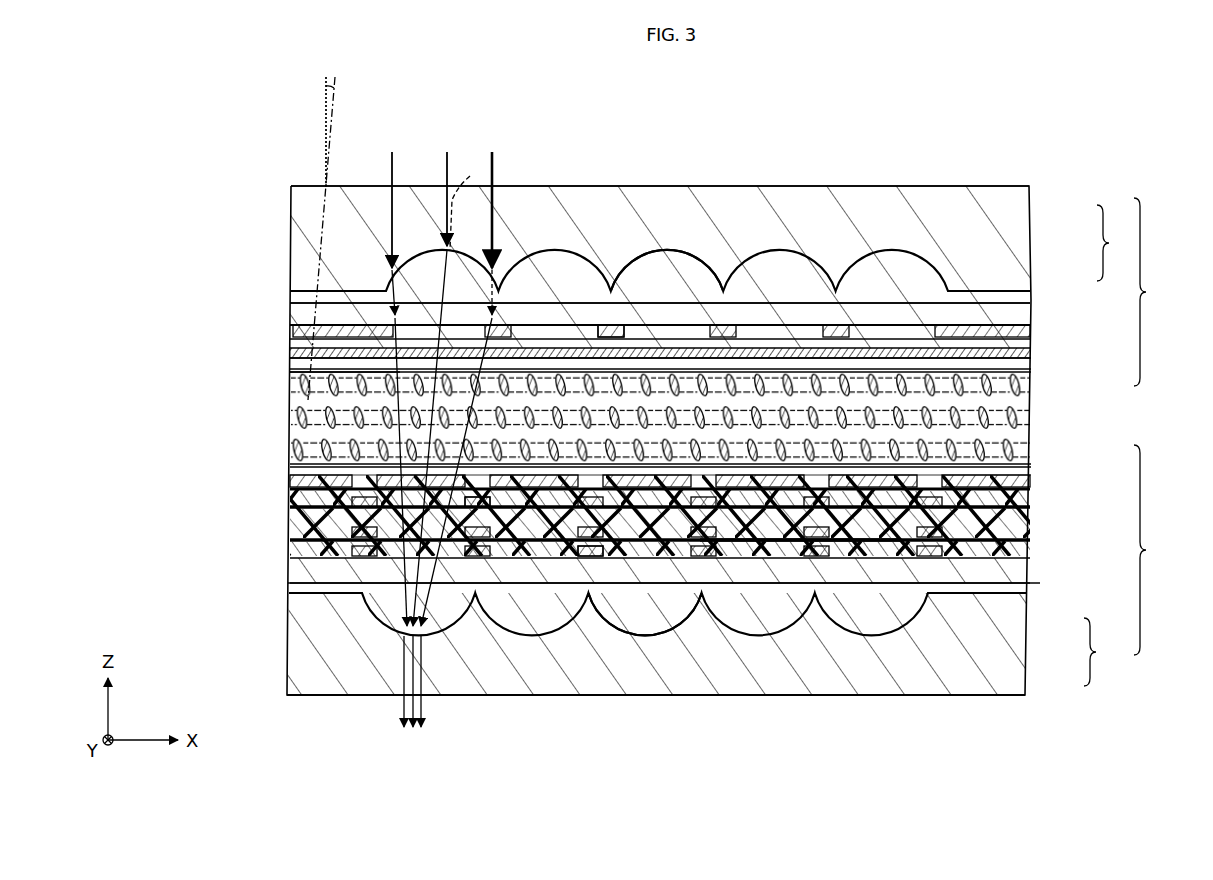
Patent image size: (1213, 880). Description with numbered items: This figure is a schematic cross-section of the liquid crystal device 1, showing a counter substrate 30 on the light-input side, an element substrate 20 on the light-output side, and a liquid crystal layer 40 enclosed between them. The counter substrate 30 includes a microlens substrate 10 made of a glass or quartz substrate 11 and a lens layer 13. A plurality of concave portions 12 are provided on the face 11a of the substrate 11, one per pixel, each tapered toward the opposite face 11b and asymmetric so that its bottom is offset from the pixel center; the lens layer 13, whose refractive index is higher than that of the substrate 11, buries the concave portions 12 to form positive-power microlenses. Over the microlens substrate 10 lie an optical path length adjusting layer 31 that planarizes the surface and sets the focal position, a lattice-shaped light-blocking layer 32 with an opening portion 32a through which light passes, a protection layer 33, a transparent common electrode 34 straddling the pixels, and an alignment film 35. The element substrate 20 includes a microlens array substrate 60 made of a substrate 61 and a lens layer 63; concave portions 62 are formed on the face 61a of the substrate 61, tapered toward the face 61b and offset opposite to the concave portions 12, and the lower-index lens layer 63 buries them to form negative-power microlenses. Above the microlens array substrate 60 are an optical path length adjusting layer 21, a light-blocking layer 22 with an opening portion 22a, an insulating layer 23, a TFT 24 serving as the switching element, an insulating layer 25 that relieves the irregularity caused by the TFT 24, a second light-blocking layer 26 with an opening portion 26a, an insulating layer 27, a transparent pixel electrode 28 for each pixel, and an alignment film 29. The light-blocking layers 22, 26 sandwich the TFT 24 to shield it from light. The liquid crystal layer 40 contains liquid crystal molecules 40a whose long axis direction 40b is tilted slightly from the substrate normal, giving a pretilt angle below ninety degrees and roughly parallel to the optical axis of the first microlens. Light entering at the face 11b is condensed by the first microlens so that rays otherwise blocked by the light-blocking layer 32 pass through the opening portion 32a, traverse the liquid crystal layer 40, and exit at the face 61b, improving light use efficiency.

The liquid crystal device 1 is at (1140, 112).
The microlens substrate 10 is at (1115, 243).
The substrate 11 is at (1034, 202).
The face 11a is at (300, 297).
The face 11b is at (291, 187).
The concave portion 12 is at (674, 262).
The lens layer 13 is at (1034, 293).
The element substrate 20 is at (1153, 550).
The optical path length adjusting layer 21 is at (1036, 586).
The light-blocking layer 22 is at (1034, 553).
The opening portion 22a is at (576, 550).
The insulating layer 23 is at (1034, 539).
The TFT 24 is at (833, 523).
The insulating layer 25 is at (1034, 521).
The light-blocking layer 26 is at (1034, 496).
The opening portion 26a is at (483, 500).
The insulating layer 27 is at (1034, 483).
The pixel electrode 28 is at (784, 560).
The alignment film 29 is at (1034, 469).
The counter substrate 30 is at (1151, 292).
The optical path length adjusting layer 31 is at (1034, 316).
The light-blocking layer 32 is at (1034, 331).
The opening portion 32a is at (590, 330).
The protection layer 33 is at (1034, 343).
The common electrode 34 is at (1034, 353).
The alignment film 35 is at (1034, 365).
The liquid crystal layer 40 is at (1034, 419).
The liquid crystal molecule 40a is at (298, 416).
The long axis direction 40b is at (333, 96).
The microlens array substrate 60 is at (1101, 652).
The substrate 61 is at (1030, 666).
The face 61a is at (300, 592).
The face 61b is at (300, 697).
The concave portion 62 is at (650, 624).
The lens layer 63 is at (1030, 612).